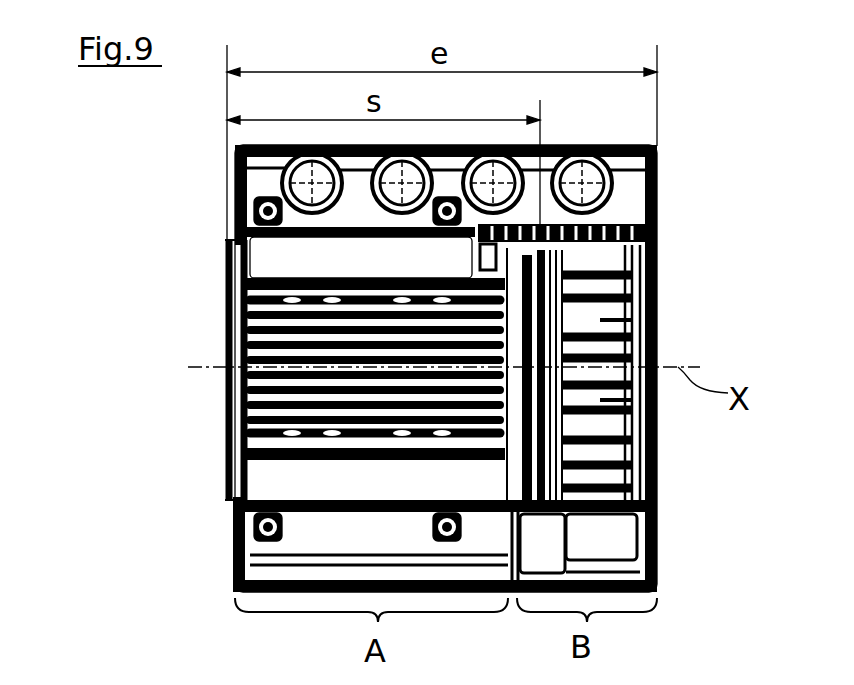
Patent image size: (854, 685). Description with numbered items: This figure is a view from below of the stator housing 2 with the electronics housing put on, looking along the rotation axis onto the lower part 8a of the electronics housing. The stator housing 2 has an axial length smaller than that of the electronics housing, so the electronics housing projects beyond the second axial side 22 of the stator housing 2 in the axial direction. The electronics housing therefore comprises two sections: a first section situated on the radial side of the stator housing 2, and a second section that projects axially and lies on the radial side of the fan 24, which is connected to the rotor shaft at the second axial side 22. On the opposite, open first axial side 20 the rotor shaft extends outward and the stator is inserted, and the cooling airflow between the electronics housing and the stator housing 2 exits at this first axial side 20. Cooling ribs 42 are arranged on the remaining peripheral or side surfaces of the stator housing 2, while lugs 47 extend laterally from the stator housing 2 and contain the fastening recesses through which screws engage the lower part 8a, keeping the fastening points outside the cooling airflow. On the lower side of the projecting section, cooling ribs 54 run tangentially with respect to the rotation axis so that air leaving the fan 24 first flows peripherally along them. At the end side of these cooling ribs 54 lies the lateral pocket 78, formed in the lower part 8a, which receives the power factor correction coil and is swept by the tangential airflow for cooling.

The stator housing 2 is at (268, 258).
The lower part 8a is at (657, 178).
The first axial side 20 is at (222, 468).
The second axial side 22 is at (655, 455).
The fan 24 is at (658, 428).
The cooling ribs 42 is at (256, 340).
The lugs 47 is at (240, 178).
The cooling ribs 54 is at (658, 225).
The lateral pocket 78 is at (553, 541).